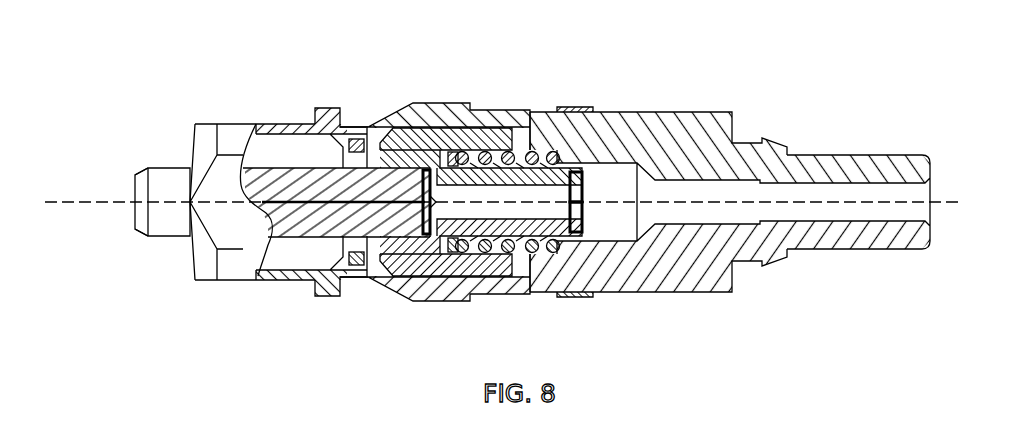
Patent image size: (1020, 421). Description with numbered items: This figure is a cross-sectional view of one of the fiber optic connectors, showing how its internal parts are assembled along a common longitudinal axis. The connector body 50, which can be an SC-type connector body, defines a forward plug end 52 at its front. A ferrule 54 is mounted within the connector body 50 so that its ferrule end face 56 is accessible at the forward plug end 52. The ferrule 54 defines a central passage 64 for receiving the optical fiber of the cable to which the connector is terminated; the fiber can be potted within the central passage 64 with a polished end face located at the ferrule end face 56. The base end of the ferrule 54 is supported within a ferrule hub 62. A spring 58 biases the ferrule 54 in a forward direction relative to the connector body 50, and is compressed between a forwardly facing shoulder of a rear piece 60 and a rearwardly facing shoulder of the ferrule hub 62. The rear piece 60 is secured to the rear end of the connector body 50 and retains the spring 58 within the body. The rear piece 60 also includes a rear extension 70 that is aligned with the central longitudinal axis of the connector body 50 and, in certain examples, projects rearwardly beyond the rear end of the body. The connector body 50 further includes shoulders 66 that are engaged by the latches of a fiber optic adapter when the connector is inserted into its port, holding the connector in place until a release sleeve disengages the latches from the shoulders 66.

The connector body 50 is at (422, 102).
The forward plug end 52 is at (193, 280).
The ferrule 54 is at (160, 167).
The ferrule end face 56 is at (135, 213).
The spring 58 is at (514, 148).
The rear piece 60 is at (657, 111).
The ferrule hub 62 is at (417, 277).
The central passage 64 is at (288, 200).
The shoulders 66 is at (332, 106).
The rear extension 70 is at (842, 154).